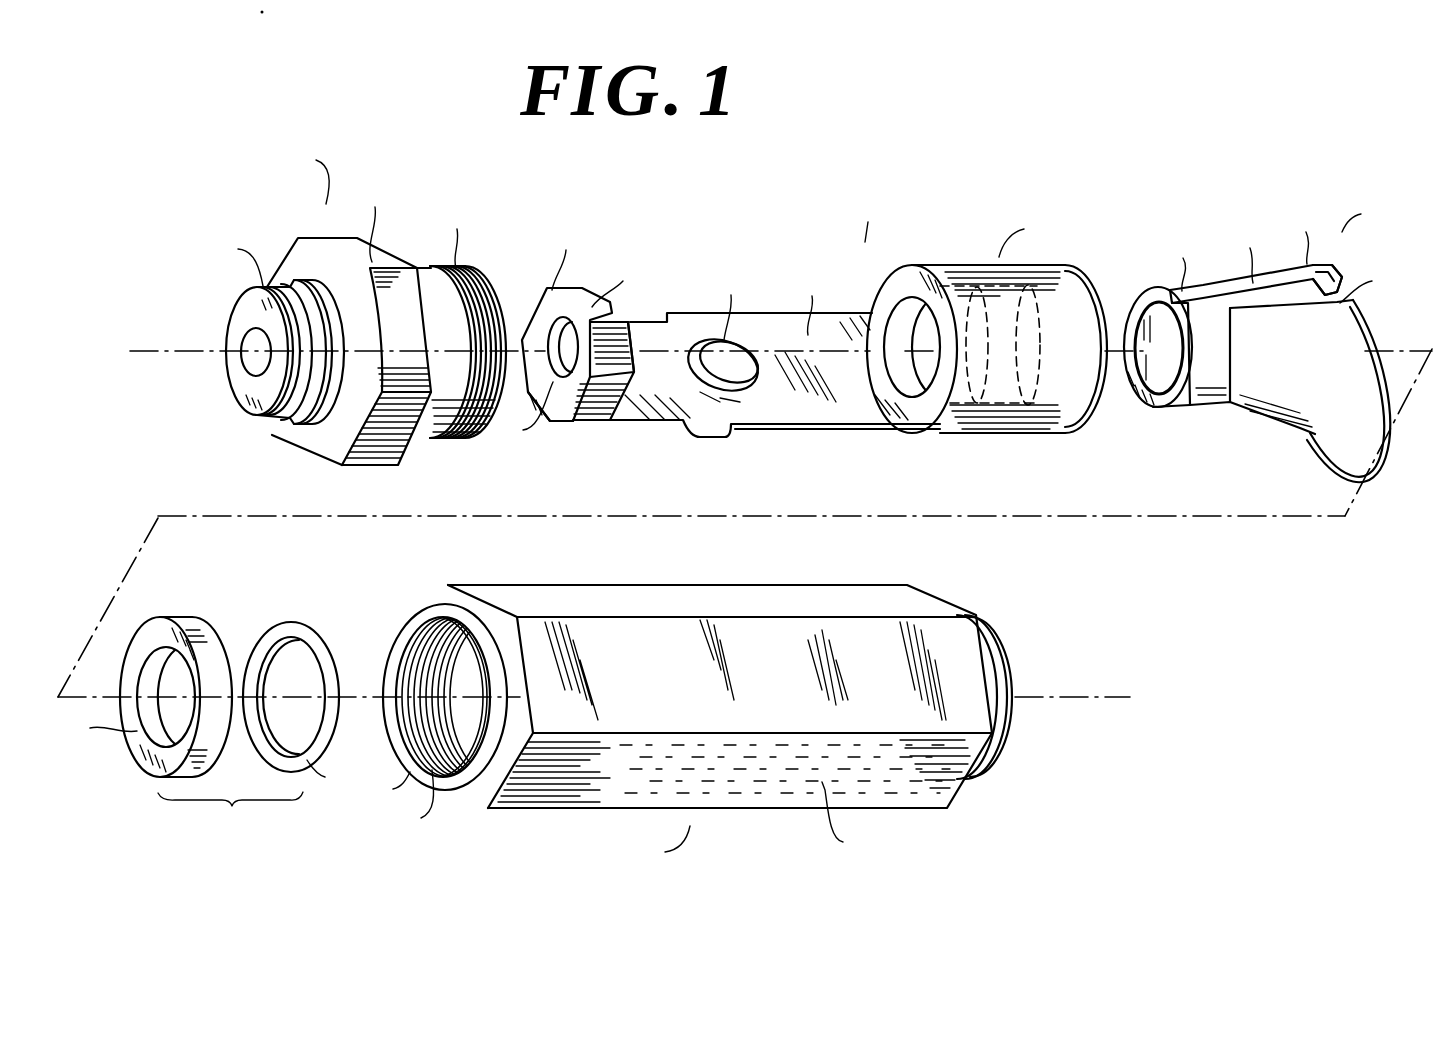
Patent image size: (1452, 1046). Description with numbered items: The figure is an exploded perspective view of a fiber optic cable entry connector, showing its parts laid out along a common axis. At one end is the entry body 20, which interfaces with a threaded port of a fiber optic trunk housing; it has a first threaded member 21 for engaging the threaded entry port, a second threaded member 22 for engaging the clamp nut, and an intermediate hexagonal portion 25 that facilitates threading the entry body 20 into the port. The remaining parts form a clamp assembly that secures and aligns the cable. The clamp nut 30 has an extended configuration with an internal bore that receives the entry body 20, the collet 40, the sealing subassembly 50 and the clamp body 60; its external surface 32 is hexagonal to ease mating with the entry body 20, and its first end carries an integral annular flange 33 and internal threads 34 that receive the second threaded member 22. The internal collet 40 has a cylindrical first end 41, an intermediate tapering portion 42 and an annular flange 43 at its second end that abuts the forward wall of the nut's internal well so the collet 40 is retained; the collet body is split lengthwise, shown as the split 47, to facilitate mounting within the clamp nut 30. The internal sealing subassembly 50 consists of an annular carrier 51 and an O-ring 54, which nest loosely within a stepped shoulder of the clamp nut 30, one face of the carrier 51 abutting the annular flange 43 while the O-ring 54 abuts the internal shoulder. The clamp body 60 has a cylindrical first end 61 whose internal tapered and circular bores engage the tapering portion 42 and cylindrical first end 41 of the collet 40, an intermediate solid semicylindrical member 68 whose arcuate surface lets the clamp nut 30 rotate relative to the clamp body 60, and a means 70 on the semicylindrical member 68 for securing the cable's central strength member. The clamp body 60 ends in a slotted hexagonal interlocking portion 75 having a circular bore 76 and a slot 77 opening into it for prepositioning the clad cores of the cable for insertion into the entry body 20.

The entry body 20 is at (354, 308).
The first threaded member 21 is at (273, 328).
The second threaded member 22 is at (468, 319).
The intermediate hexagonal portion 25 is at (349, 322).
The clamp nut 30 is at (687, 726).
The external surface 32 is at (734, 738).
The integral annular flange 33 is at (435, 704).
The internal threads 34 is at (442, 725).
The internal collet 40 is at (1264, 340).
The first end 41 is at (1158, 323).
The intermediate tapering portion 42 is at (1256, 265).
The annular flange 43 is at (1309, 255).
The lengthwise split 47 is at (1279, 373).
The internal sealing subassembly 50 is at (205, 727).
The annular carrier 51 is at (145, 697).
The O-ring 54 is at (297, 707).
The clamp body 60 is at (858, 315).
The first end (cylindrical portion) 61 is at (987, 324).
The semicylindrical member 68 is at (775, 352).
The means for securing the central strength member 70 is at (723, 334).
The interlocking portion (slotted hexagonal portion) 75 is at (571, 332).
The circular bore 76 is at (532, 412).
The slot 77 is at (620, 313).